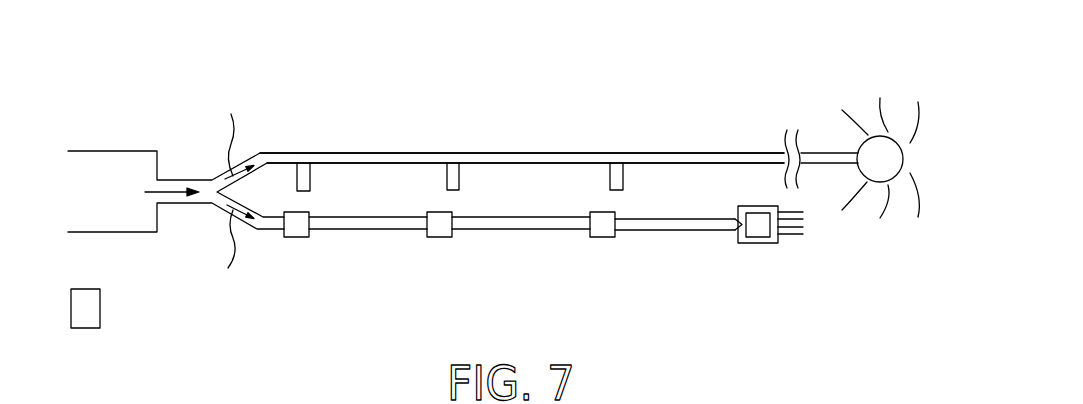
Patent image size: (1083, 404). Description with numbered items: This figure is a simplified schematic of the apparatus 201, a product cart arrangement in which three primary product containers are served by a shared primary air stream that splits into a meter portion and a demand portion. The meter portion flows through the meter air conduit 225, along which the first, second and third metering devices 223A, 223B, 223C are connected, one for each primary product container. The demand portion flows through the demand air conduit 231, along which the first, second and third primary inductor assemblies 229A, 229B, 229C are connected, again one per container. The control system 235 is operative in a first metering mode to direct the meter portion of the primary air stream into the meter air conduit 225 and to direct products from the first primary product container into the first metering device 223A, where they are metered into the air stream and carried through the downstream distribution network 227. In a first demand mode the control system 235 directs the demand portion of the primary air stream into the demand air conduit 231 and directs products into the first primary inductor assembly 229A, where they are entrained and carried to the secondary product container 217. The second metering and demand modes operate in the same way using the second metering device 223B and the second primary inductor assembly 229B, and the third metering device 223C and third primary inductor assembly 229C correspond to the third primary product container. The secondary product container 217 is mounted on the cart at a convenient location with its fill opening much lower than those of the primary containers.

The apparatus 201 is at (499, 158).
The meter air conduit 225 is at (393, 152).
The first metering device 223A is at (310, 178).
The second metering device 223B is at (459, 178).
The third metering device 223C is at (623, 178).
The first primary inductor assembly 229A is at (296, 237).
The second primary inductor assembly 229B is at (437, 237).
The third primary inductor assembly 229C is at (603, 237).
The demand air conduit 231 is at (565, 232).
The secondary product container 217 is at (762, 243).
The downstream distribution network 227 is at (903, 158).
The control system 235 is at (85, 328).